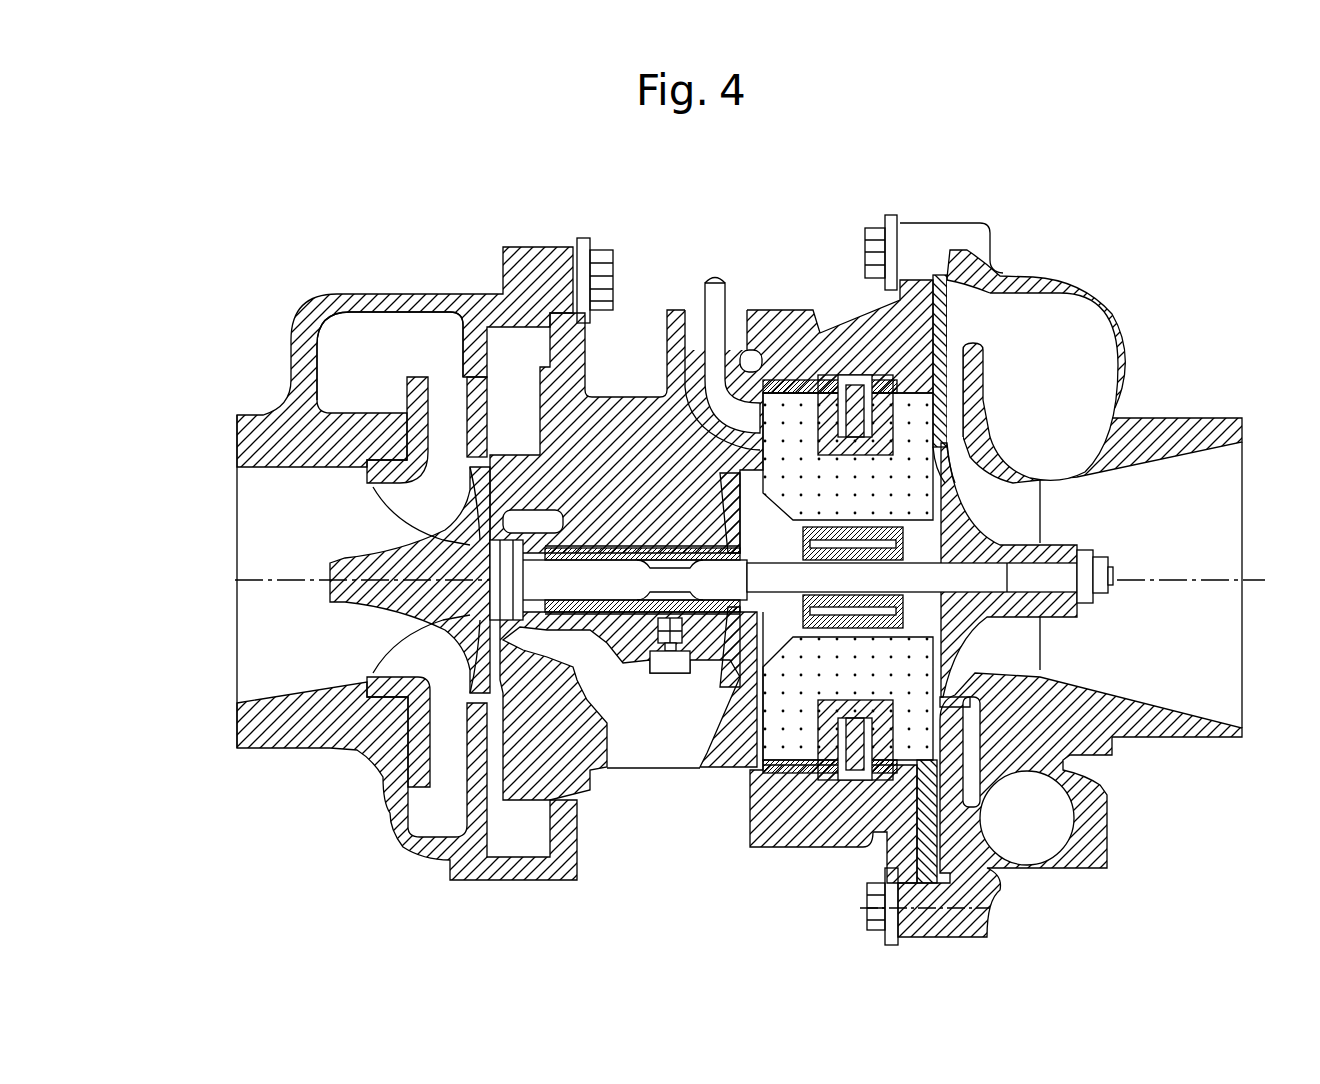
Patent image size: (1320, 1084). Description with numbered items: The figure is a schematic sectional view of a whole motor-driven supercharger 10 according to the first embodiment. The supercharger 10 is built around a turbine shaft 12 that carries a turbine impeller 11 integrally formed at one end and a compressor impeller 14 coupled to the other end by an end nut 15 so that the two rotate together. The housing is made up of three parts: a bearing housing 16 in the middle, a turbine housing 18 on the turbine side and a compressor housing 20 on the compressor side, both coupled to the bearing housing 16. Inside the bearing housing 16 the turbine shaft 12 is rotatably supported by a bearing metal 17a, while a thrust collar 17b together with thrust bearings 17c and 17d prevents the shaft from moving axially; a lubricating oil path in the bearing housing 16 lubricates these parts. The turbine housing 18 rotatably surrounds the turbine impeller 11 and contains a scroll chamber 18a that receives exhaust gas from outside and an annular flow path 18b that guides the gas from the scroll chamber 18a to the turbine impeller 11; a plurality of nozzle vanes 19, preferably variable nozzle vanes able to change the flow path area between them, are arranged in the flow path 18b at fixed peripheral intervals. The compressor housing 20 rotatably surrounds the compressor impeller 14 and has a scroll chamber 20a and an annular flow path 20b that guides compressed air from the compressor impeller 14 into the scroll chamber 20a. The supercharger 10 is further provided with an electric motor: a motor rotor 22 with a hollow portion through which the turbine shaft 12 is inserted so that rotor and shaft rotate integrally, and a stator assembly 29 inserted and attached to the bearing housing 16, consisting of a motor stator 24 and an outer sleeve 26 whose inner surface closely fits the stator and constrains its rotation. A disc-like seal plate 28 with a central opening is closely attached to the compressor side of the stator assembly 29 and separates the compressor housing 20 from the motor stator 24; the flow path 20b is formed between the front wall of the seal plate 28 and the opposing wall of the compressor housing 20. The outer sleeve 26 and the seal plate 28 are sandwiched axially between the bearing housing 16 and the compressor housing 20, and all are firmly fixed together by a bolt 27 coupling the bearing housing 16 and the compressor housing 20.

The motor-driven supercharger 10 is at (255, 273).
The turbine impeller 11 is at (372, 592).
The turbine shaft 12 is at (600, 590).
The compressor impeller 14 is at (985, 610).
The end nut 15 is at (1100, 565).
The bearing housing 16 is at (633, 392).
The bearing metal 17a is at (570, 547).
The thrust collar 17b is at (723, 527).
The thrust bearing 17c is at (737, 537).
The thrust bearing 17d is at (745, 483).
The turbine housing 18 is at (378, 288).
The scroll chamber 18a is at (408, 313).
The flow path 18b is at (430, 440).
The nozzle vane 19 is at (440, 413).
The compressor housing 20 is at (1110, 295).
The scroll chamber 20a is at (1068, 348).
The flow path 20b is at (957, 398).
The motor rotor 22 is at (825, 632).
The motor stator 24 is at (790, 407).
The outer sleeve 26 is at (857, 387).
The bolt 27 is at (867, 900).
The seal plate 28 is at (949, 328).
The stator assembly 29 is at (833, 372).